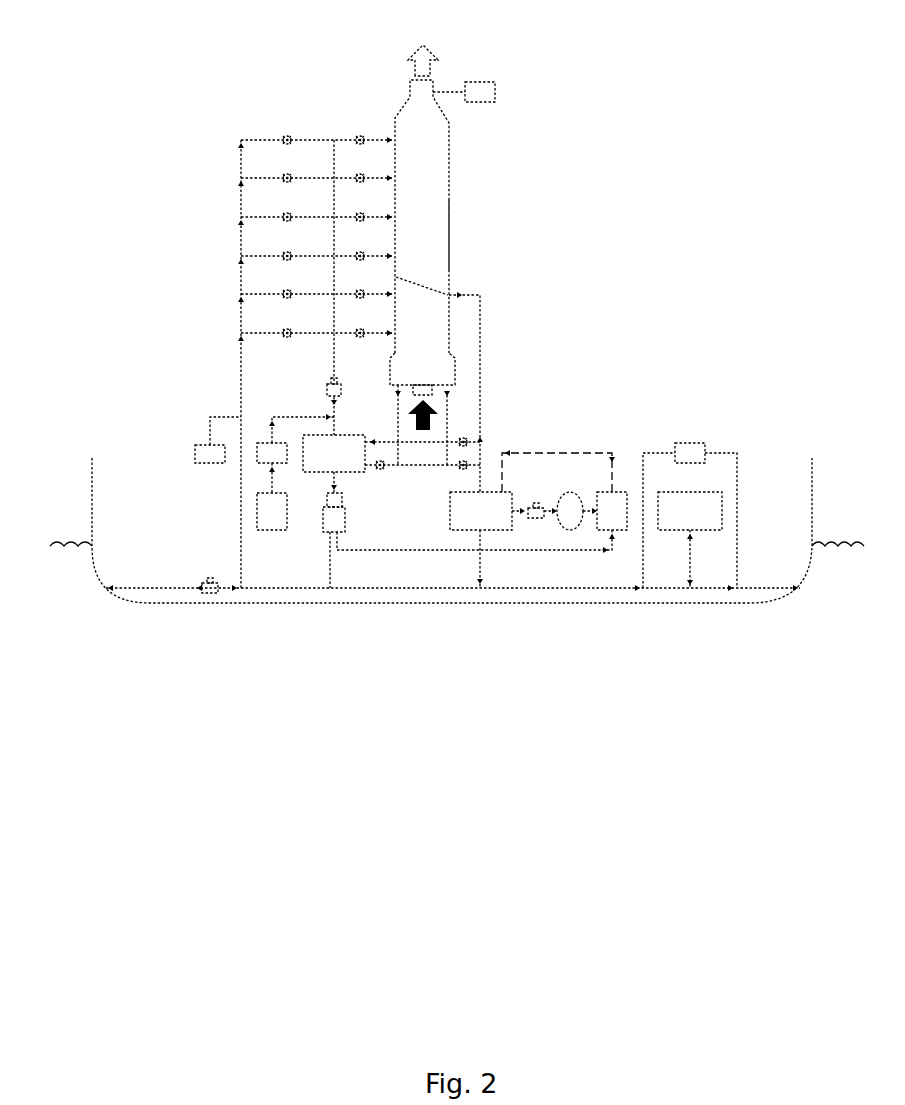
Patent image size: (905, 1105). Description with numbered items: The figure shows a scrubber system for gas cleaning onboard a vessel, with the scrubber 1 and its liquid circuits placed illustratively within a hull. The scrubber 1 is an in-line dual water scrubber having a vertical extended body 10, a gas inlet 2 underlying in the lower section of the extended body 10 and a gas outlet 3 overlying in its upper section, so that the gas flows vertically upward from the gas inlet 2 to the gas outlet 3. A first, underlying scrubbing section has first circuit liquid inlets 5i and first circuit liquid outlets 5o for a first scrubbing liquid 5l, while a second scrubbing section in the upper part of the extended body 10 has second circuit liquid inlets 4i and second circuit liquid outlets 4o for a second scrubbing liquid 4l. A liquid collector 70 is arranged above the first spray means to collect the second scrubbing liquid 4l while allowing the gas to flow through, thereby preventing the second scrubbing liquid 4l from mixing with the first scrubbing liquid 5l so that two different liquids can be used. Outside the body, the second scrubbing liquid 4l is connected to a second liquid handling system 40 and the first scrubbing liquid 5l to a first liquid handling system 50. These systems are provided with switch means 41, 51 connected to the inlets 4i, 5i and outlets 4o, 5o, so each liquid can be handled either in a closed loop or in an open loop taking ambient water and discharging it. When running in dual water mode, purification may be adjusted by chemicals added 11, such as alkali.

The scrubber 1 is at (465, 147).
The gas outlet 3 is at (435, 72).
The vertical extended body 10 is at (449, 235).
The liquid collector 70 is at (422, 281).
The second circuit liquid inlets 4i is at (383, 250).
The first circuit liquid inlets 5i is at (362, 293).
The switch means 41 is at (362, 243).
The switch means 51 is at (362, 302).
The first scrubbing liquid 5l is at (173, 366).
The second scrubbing liquid 4l is at (350, 287).
The second liquid handling system 40 is at (310, 391).
The second circuit liquid outlets 4o is at (484, 390).
The first circuit liquid outlets 5o is at (400, 435).
The gas inlet 2 is at (433, 401).
The first liquid handling system 50 is at (243, 518).
The chemicals added 11 is at (280, 540).